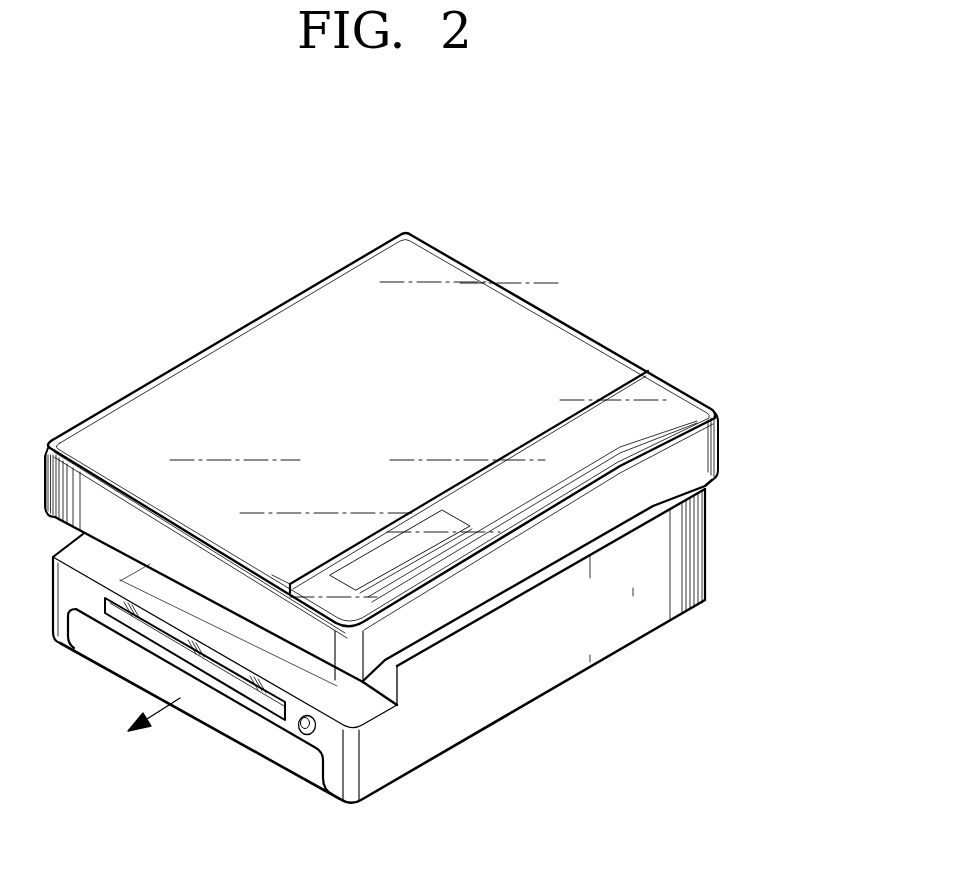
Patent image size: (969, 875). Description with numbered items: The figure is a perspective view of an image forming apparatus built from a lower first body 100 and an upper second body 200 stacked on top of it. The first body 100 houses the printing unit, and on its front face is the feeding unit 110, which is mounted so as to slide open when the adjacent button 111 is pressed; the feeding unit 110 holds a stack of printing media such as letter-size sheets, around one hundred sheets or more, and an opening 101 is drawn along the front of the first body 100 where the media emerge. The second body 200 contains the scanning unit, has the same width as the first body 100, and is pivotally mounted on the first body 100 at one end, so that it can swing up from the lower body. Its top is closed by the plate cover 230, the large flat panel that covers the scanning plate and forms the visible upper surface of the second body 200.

The first body 100 is at (692, 552).
The paper discharge slot 101 is at (165, 643).
The feeding unit 110 is at (238, 725).
The button 111 is at (296, 737).
The second body 200 is at (693, 450).
The plate cover 230 is at (507, 320).